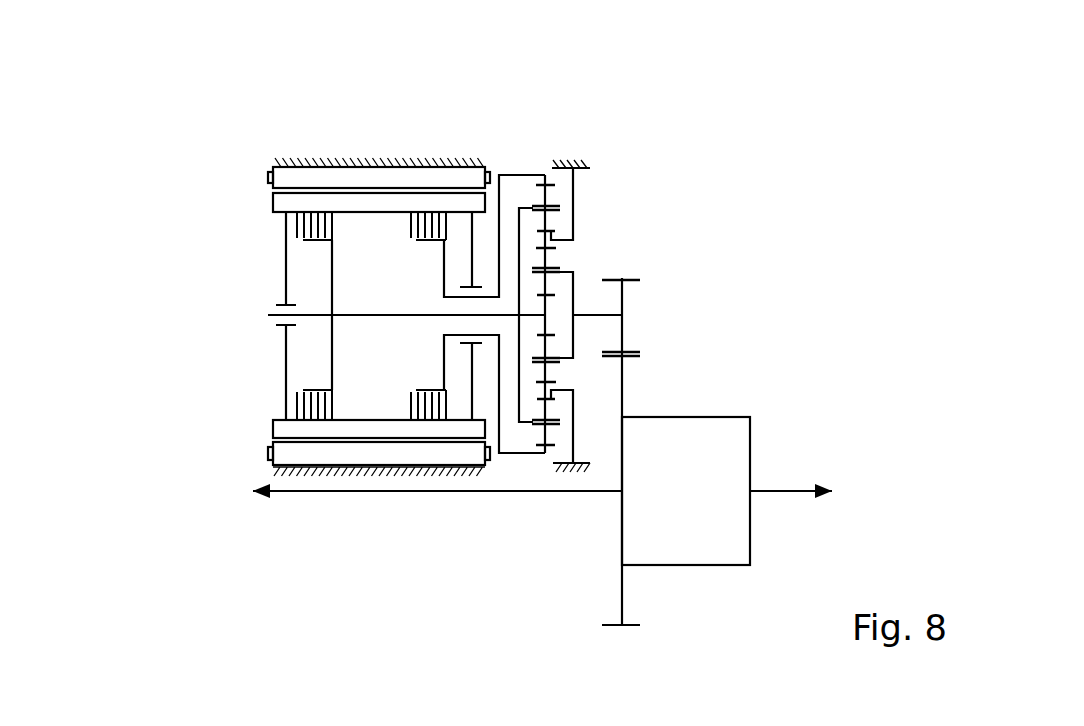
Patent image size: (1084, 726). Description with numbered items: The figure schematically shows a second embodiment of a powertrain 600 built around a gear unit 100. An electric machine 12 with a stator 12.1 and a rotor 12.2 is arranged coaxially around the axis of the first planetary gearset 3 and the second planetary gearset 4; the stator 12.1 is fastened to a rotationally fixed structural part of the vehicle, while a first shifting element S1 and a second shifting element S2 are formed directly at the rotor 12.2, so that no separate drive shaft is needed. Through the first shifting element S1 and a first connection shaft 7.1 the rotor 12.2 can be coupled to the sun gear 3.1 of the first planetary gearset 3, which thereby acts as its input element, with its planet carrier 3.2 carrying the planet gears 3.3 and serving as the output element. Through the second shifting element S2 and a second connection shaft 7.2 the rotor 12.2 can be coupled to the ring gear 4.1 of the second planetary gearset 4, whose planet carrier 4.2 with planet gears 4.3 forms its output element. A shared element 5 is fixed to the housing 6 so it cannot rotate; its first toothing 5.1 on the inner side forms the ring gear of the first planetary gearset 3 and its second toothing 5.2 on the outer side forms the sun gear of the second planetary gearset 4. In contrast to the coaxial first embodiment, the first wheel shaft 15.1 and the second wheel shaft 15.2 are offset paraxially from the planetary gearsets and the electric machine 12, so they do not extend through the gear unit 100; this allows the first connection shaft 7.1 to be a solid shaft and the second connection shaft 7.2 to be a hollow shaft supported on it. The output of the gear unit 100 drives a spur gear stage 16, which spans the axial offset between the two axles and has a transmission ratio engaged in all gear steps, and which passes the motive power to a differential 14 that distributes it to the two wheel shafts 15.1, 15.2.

The gear unit 100 is at (663, 110).
The powertrain 600 is at (797, 110).
The electric machine 12 is at (285, 147).
The stator 12.1 is at (317, 175).
The rotor 12.2 is at (285, 203).
The first shifting element S1 is at (313, 242).
The second shifting element S2 is at (423, 208).
The first connection shaft 7.1 is at (330, 362).
The second connection shaft 7.2 is at (443, 258).
The second planetary gearset 4 is at (555, 432).
The ring gear 4.1 is at (540, 183).
The planet carrier 4.2 is at (519, 207).
The planet gears 4.3 is at (552, 192).
The shared element 5 is at (552, 245).
The first toothing 5.1 is at (538, 383).
The second toothing 5.2 is at (560, 232).
The first planetary gearset 3 is at (572, 368).
The sun gear 3.1 is at (535, 335).
The planet carrier 3.2 is at (560, 272).
The planet gears 3.3 is at (555, 372).
The housing 6 is at (570, 472).
The differential 14 is at (735, 448).
The first wheel shaft 15.1 is at (373, 492).
The second wheel shaft 15.2 is at (783, 493).
The spur gear stage 16 is at (650, 347).